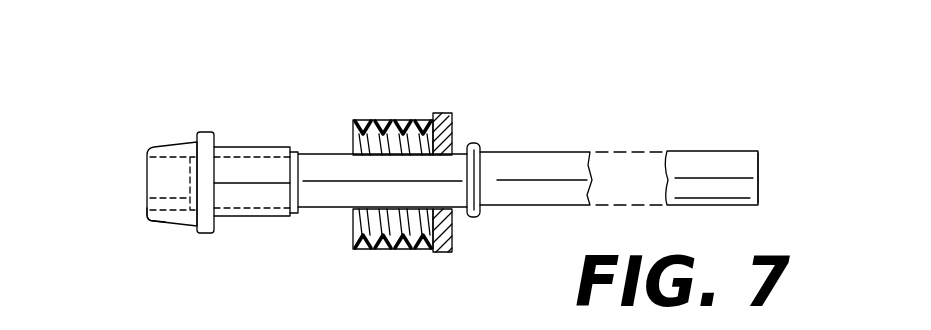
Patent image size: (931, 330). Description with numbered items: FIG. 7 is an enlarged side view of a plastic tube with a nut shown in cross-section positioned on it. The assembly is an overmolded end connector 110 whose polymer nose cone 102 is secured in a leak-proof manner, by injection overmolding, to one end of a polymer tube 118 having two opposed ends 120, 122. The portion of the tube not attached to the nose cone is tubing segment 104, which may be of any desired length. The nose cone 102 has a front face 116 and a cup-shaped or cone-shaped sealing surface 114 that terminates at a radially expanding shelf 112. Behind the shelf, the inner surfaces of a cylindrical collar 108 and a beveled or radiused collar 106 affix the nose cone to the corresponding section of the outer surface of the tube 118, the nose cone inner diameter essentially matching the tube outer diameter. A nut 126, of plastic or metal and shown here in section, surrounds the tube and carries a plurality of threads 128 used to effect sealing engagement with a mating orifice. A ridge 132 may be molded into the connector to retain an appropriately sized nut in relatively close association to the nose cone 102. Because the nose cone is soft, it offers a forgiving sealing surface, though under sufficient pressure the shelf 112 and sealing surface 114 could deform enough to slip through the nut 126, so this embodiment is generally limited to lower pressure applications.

The overmolded end connector 110 is at (235, 124).
The polymer nose cone 102 is at (157, 141).
The front face 116 is at (147, 168).
The second end of tube 122 is at (150, 198).
The sealing surface 114 is at (163, 224).
The radially expanding shelf 112 is at (203, 233).
The cylindrical collar 108 is at (253, 219).
The beveled or radiused collar 106 is at (303, 218).
The threads 128 is at (353, 223).
The nut 126 is at (407, 115).
The ridge 132 is at (474, 143).
The polymer tube 118 is at (553, 152).
The tubing segment 104 is at (716, 150).
The first end of tube 120 is at (758, 170).